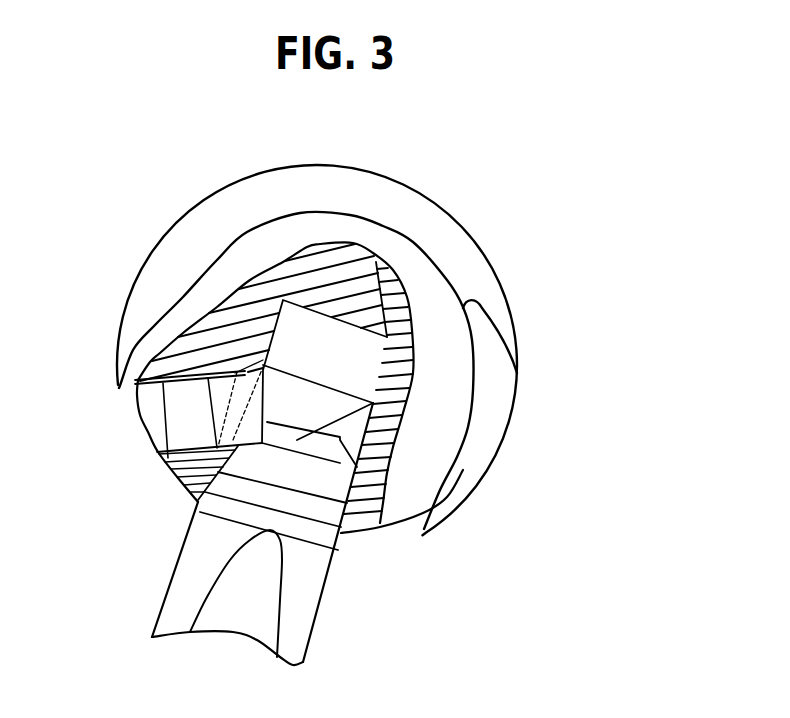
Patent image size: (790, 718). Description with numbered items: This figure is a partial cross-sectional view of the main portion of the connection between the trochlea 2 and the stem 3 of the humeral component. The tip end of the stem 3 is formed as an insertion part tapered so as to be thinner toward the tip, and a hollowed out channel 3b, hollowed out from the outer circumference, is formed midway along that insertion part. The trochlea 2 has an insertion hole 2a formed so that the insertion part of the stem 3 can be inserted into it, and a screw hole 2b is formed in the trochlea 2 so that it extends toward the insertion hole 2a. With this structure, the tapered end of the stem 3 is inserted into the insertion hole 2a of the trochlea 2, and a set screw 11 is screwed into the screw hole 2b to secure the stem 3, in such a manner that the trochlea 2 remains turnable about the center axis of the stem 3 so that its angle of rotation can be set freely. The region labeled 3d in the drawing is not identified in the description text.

The trochlea 2 is at (433, 340).
The insertion hole 2a is at (347, 452).
The screw hole 2b is at (152, 408).
The stem 3 is at (303, 610).
The hollowed out channel 3b is at (383, 390).
The head recess 3d is at (347, 345).
The set screw 11 is at (198, 432).